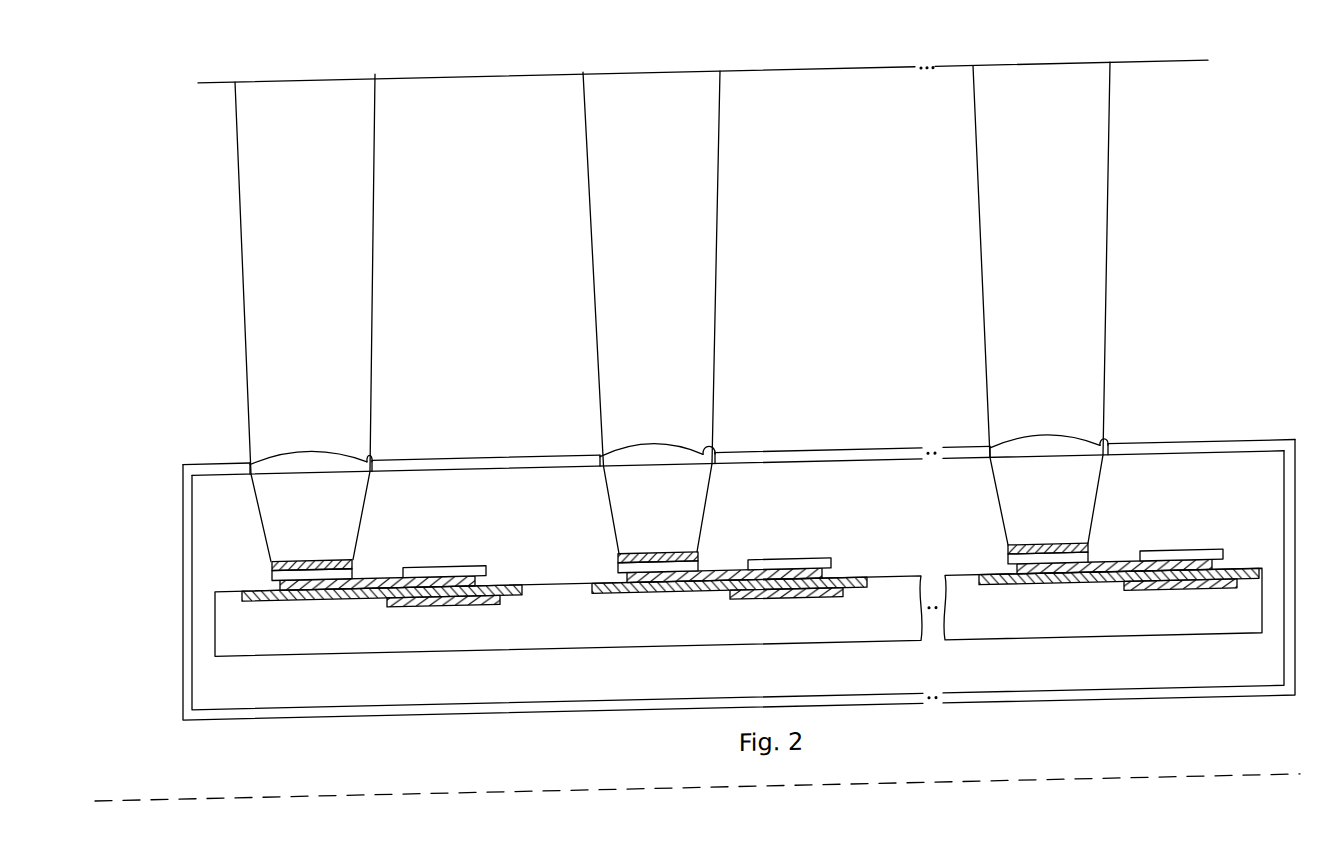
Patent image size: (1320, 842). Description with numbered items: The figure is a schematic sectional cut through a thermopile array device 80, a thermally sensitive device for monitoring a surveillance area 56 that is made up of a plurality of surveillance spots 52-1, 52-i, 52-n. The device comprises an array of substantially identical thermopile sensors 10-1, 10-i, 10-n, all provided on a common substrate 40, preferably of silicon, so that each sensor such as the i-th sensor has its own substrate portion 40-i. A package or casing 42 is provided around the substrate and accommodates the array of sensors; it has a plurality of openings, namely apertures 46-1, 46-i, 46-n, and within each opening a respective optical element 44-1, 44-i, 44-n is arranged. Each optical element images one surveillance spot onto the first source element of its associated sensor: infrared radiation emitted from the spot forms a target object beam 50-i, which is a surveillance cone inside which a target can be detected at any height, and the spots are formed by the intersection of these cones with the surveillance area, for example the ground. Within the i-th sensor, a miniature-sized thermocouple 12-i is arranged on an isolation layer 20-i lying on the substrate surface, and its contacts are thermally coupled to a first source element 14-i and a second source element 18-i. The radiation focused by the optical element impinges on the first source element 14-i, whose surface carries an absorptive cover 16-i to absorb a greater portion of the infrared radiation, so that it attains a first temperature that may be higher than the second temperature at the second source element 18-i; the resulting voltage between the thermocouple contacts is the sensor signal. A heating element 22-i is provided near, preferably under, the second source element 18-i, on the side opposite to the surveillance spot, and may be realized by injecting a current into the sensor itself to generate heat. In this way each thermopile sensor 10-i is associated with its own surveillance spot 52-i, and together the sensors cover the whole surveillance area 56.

The thermopile sensor 10-1 is at (327, 644).
The thermopile sensor 10-i is at (751, 590).
The thermopile sensor 10-n is at (1165, 648).
The thermocouple 12-i is at (814, 578).
The first source element 14-i is at (702, 566).
The absorptive cover 16-i is at (657, 550).
The second source element 18-i is at (803, 560).
The isolation layer 20-i is at (858, 592).
The heating element 22-i is at (822, 599).
The substrate 40 is at (893, 581).
The substrate 40-i is at (618, 507).
The package 42 is at (843, 457).
The optical element 44-1 is at (308, 447).
The optical element 44-i is at (655, 445).
The optical element 44-n is at (1047, 447).
The aperture 46-1 is at (360, 452).
The aperture 46-i is at (705, 446).
The aperture 46-n is at (1100, 448).
The object beam (surveillance cone) 50-i is at (697, 223).
The surveillance spot 52-1 is at (375, 62).
The surveillance spot 52-i is at (688, 245).
The surveillance spot 52-n is at (973, 62).
The surveillance area 56 is at (798, 71).
The thermopile array device 80 is at (1212, 721).